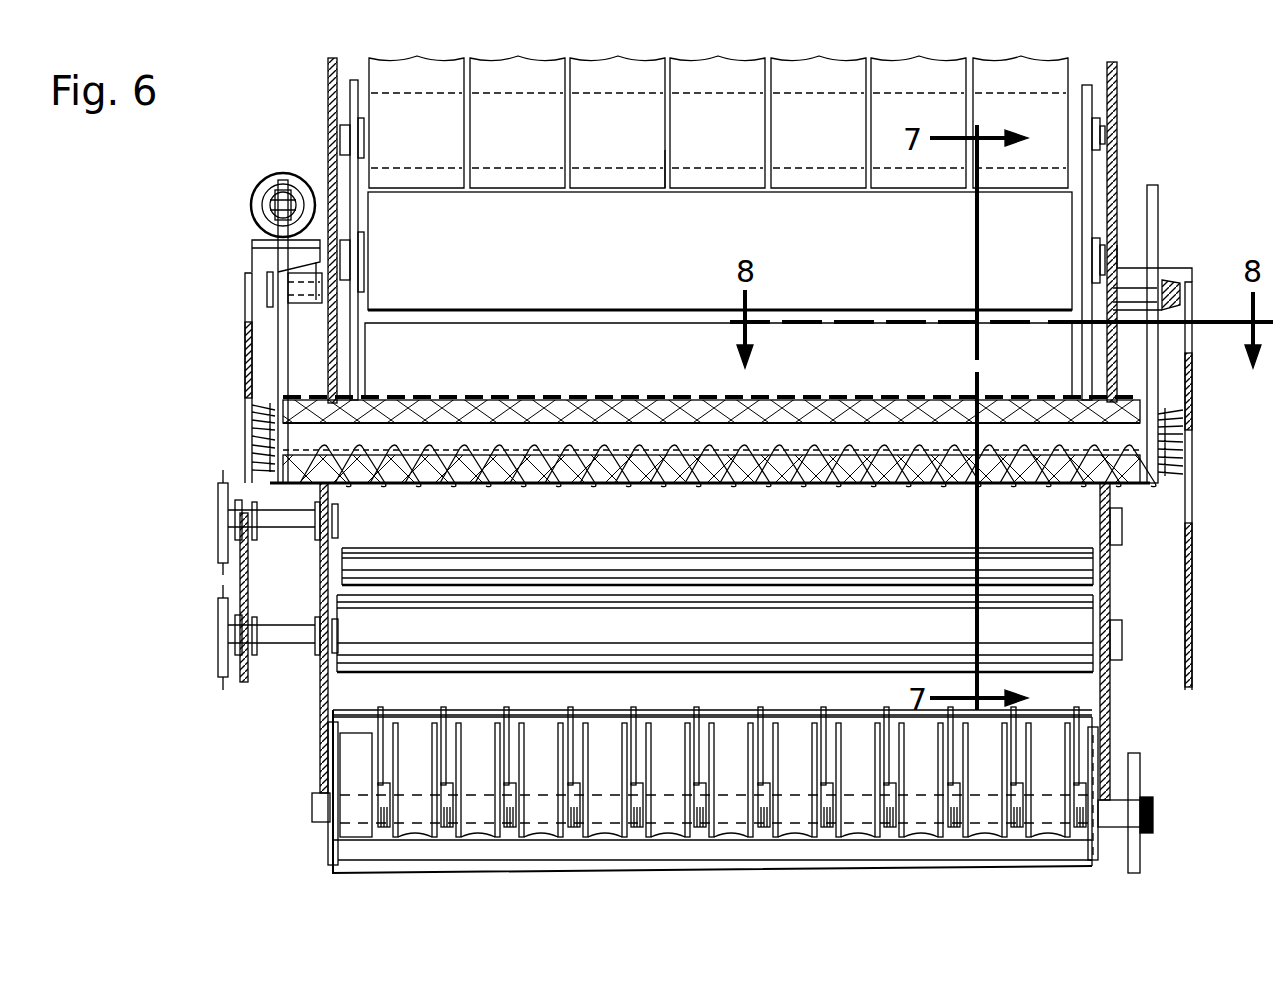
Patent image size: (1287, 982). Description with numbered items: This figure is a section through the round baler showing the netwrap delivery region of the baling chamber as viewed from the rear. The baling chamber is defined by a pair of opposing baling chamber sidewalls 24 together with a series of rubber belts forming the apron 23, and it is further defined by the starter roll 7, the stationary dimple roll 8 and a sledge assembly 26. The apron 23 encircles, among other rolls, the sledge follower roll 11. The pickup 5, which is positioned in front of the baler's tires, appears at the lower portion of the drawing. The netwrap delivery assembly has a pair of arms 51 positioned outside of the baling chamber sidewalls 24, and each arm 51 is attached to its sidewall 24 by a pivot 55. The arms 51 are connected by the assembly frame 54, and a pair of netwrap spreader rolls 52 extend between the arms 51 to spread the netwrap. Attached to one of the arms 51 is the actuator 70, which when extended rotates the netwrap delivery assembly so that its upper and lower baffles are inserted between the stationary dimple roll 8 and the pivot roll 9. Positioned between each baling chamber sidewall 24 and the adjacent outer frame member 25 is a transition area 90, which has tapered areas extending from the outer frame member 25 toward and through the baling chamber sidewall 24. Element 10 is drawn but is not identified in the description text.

The pickup 5 is at (1157, 719).
The starter roll 7 is at (704, 637).
The stationary dimple roll 8 is at (712, 540).
The pivot roll 9 is at (566, 369).
The hopper housing 10 is at (551, 253).
The sledge follower roll 11 is at (665, 188).
The apron 23 is at (420, 146).
The baling chamber sidewall 24 is at (328, 82).
The outer frame member 25 is at (245, 362).
The sledge assembly 26 is at (355, 168).
The arm 51 is at (277, 322).
The netwrap spreader roll 52 is at (605, 492).
The assembly frame 54 is at (1139, 513).
The pivot 55 is at (1168, 283).
The actuator 70 is at (256, 200).
The transition area 90 is at (252, 436).